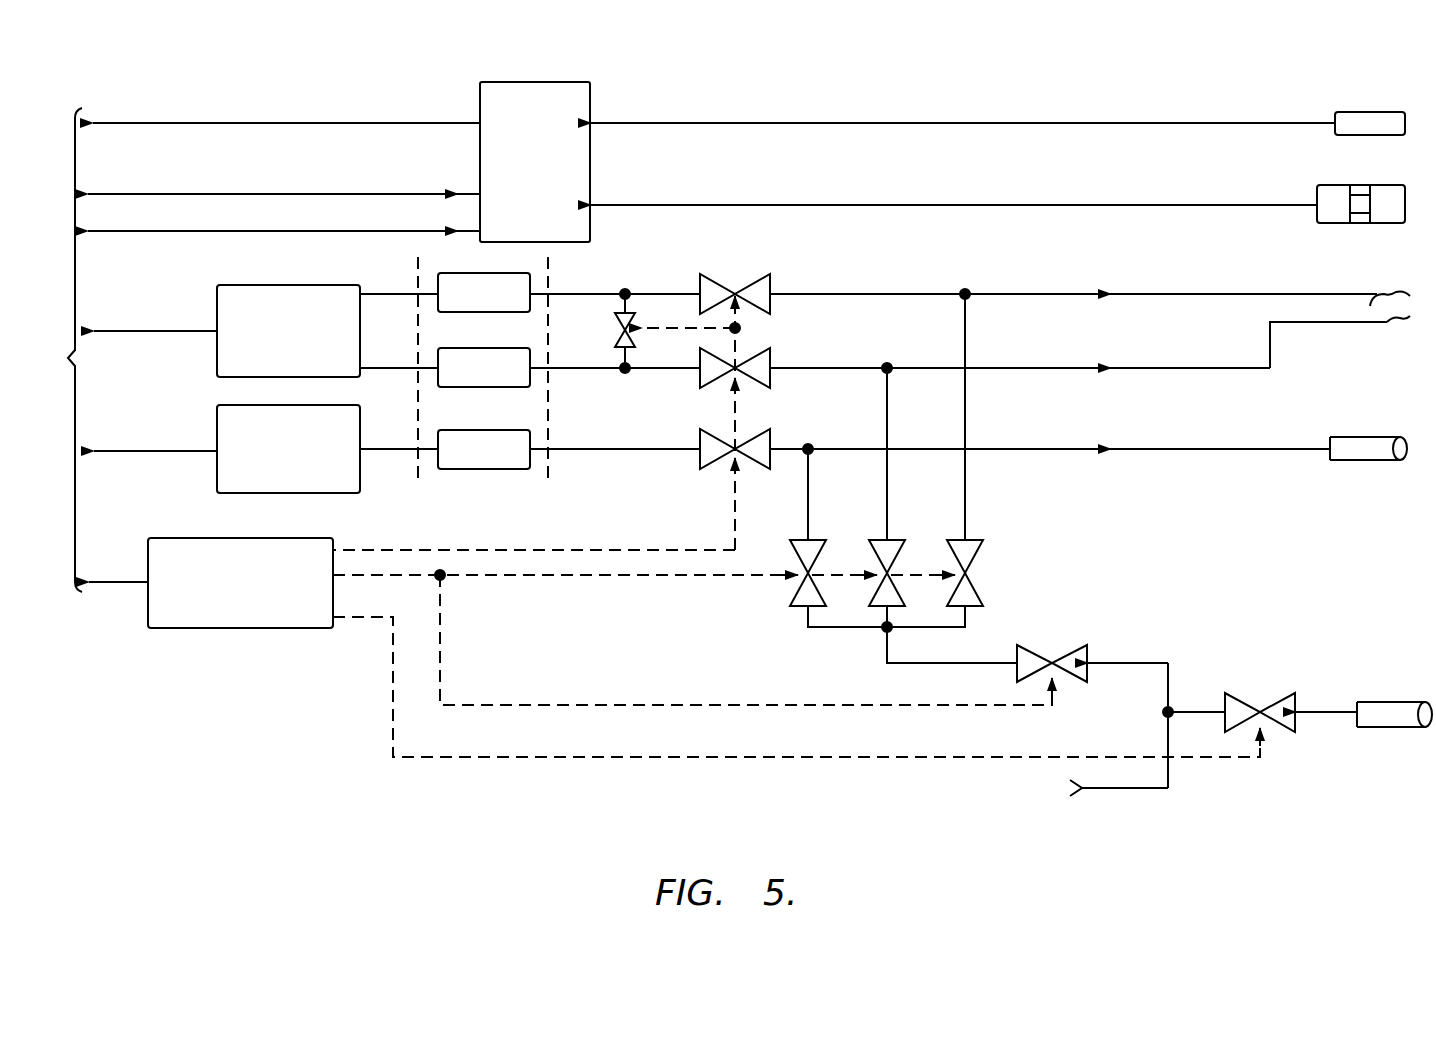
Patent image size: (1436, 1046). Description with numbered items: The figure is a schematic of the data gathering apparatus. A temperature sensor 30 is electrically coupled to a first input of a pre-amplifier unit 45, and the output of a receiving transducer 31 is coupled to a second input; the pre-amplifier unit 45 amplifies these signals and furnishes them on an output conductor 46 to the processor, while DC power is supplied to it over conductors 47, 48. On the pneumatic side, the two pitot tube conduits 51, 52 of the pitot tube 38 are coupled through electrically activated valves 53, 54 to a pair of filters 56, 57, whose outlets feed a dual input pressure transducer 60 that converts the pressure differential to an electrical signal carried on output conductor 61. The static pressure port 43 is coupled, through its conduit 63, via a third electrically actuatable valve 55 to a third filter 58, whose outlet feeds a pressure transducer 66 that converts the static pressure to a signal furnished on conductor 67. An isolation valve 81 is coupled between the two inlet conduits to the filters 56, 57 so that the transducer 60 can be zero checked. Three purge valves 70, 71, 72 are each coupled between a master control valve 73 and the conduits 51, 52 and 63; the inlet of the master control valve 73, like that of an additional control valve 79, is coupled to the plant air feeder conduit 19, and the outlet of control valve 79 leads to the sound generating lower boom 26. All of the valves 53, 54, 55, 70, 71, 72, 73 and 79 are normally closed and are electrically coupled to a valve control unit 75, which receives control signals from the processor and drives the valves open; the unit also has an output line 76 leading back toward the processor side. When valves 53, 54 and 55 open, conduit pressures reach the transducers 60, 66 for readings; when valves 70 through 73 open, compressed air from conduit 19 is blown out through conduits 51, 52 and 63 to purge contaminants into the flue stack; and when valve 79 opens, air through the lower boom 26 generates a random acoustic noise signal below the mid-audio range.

The plant air feeder conduit 19 is at (1127, 790).
The sound generating lower boom 26 is at (1400, 712).
The temperature sensor 30 is at (1360, 114).
The transducer 31 is at (1350, 190).
The pitot tube 38 is at (1370, 308).
The static pressure port 43 is at (1355, 446).
The pre-amplifier unit 45 is at (568, 84).
The output conductor 46 is at (250, 122).
The conductor 47 is at (245, 193).
The conductor 48 is at (245, 230).
The pitot tube conduit 51 is at (868, 293).
The pitot tube conduit 52 is at (848, 367).
The electrically activated valve 53 is at (758, 292).
The electrically activated valve 54 is at (758, 364).
The third electrically actuatable valve 55 is at (758, 446).
The filter 56 is at (497, 272).
The filter 57 is at (497, 347).
The third filter 58 is at (497, 429).
The dual input pressure transducer 60 is at (338, 284).
The output conductor 61 is at (143, 330).
The conduit 63 is at (832, 448).
The pressure transducer 66 is at (348, 404).
The conductor 67 is at (140, 450).
The purge valve 70 is at (798, 598).
The purge valve 71 is at (878, 598).
The purge valve 72 is at (958, 598).
The master control valve 73 is at (1072, 658).
The valve control unit 75 is at (318, 538).
The control unit output line 76 is at (112, 582).
The control valve 79 is at (1235, 708).
The isolation valve 81 is at (616, 324).